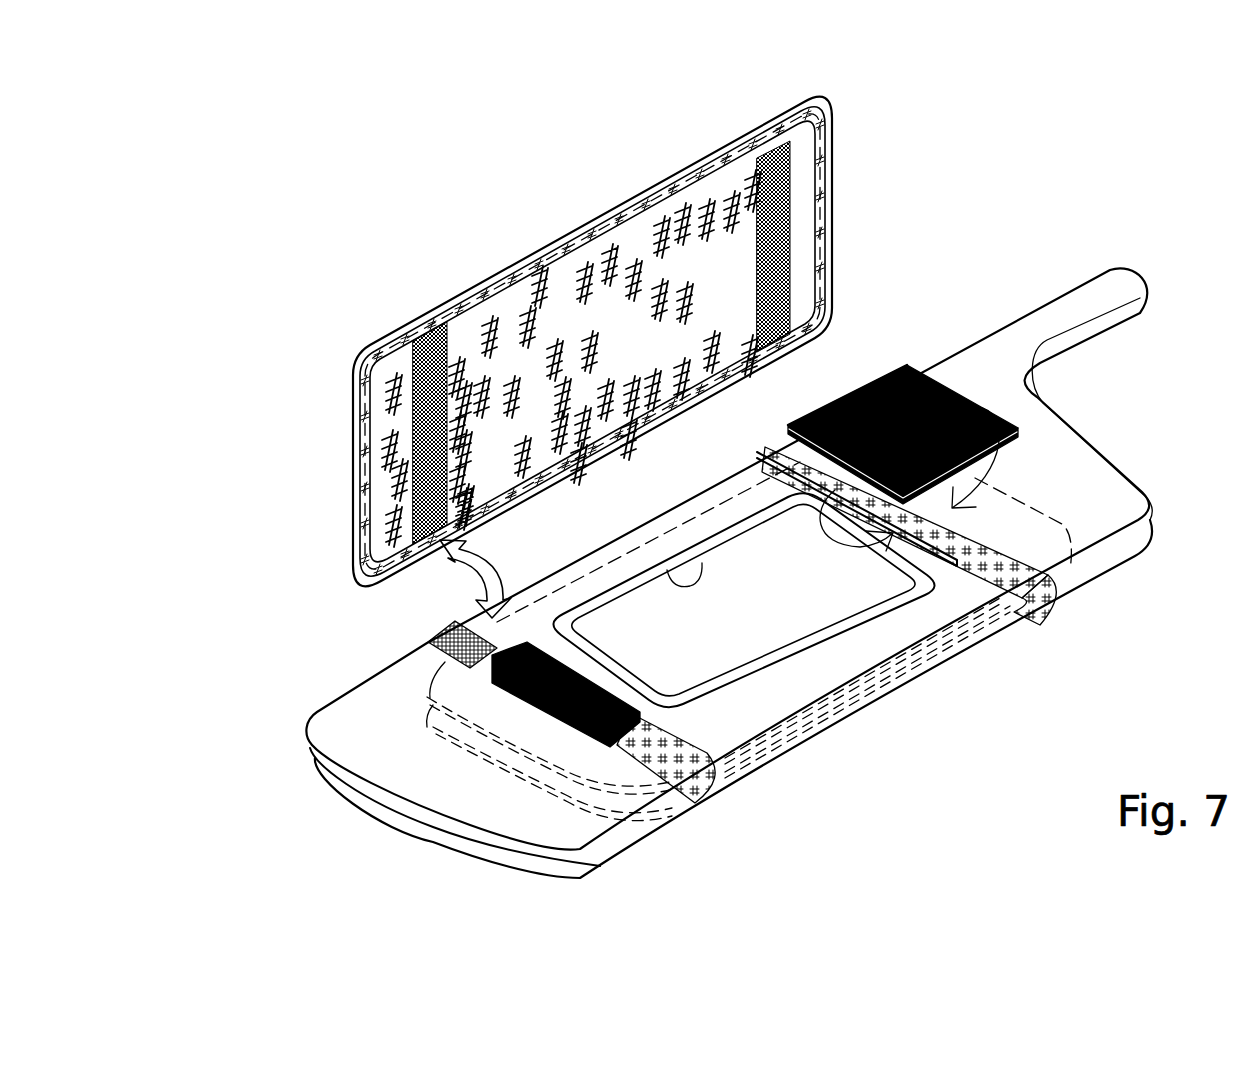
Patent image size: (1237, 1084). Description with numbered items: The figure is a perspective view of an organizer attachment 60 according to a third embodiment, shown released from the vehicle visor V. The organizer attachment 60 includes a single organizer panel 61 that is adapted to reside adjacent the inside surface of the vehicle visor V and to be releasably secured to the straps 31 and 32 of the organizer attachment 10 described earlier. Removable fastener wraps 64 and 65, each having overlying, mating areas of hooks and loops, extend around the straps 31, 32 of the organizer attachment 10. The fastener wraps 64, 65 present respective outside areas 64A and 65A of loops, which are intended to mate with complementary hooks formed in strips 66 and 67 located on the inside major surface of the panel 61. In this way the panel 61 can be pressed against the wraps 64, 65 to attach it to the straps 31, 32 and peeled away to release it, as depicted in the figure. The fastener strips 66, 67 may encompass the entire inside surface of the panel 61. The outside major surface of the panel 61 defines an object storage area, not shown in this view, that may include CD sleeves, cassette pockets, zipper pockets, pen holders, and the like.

The organizer attachment 10 is at (417, 724).
The strap 31 is at (432, 642).
The strap 32 is at (1058, 598).
The organizer attachment 60 is at (326, 324).
The organizer panel 61 is at (596, 262).
The removable fastener wrap 64 is at (537, 708).
The outside area of loops 64A is at (597, 752).
The removable fastener wrap 65 is at (915, 366).
The outside area of loops 65A is at (871, 382).
The fastener strip 66 is at (409, 372).
The fastener strip 67 is at (757, 222).
The vehicle visor V is at (1015, 325).